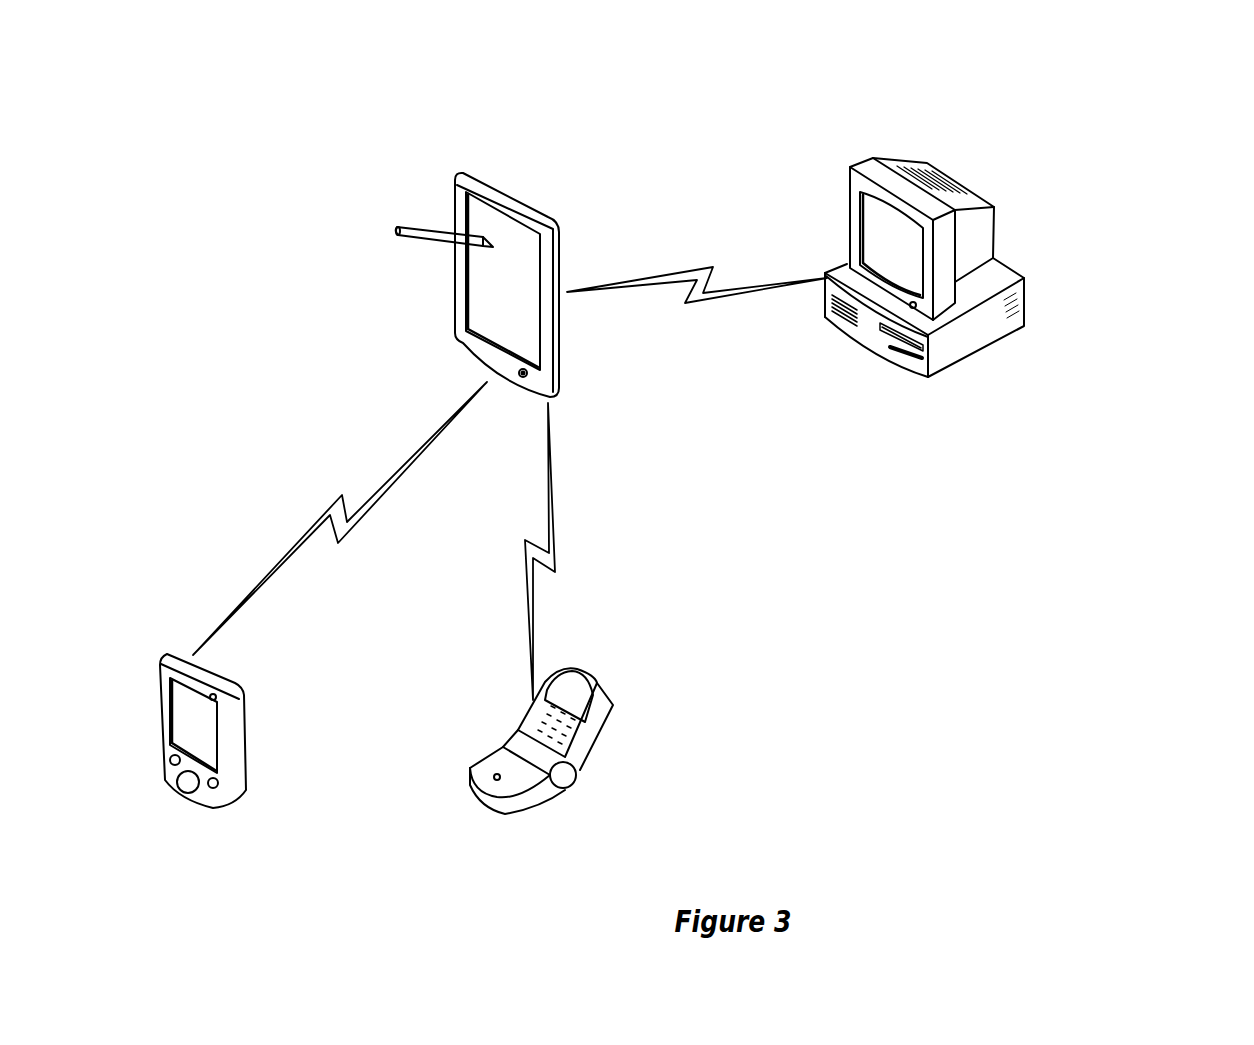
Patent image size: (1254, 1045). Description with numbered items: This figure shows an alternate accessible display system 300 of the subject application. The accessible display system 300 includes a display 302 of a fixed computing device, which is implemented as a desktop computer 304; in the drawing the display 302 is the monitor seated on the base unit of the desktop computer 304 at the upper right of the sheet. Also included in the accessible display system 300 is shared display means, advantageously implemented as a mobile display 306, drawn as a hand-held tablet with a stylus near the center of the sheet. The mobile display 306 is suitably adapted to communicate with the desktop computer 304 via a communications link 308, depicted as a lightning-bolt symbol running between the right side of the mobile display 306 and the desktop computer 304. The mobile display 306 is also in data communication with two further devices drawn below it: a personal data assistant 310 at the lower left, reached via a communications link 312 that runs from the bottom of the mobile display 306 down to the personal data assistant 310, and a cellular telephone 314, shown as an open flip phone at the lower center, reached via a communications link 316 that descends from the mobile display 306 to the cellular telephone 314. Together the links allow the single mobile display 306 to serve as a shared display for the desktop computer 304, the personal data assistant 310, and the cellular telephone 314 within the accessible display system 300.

The accessible display system 300 is at (1113, 78).
The display 302 is at (994, 205).
The desktop computer 304 is at (943, 368).
The mobile display 306 is at (558, 223).
The communications link 308 is at (742, 297).
The personal data assistant 310 is at (245, 687).
The communications link 312 is at (319, 514).
The cellular telephone 314 is at (603, 683).
The communications link 316 is at (524, 540).